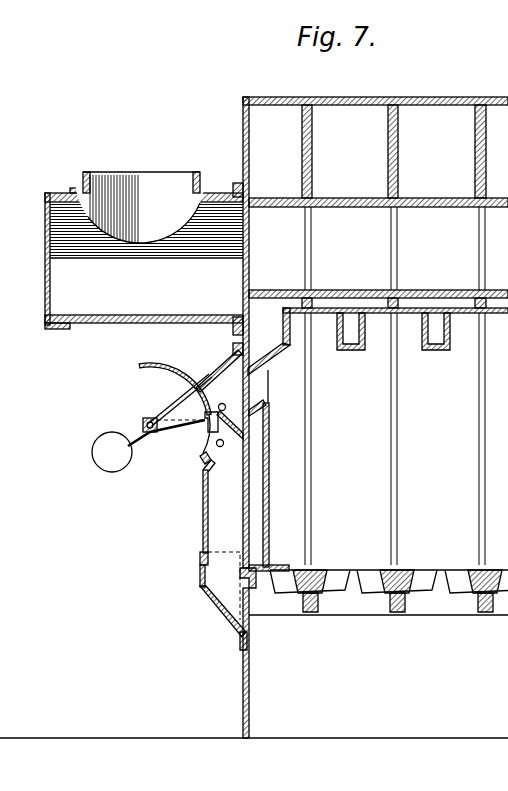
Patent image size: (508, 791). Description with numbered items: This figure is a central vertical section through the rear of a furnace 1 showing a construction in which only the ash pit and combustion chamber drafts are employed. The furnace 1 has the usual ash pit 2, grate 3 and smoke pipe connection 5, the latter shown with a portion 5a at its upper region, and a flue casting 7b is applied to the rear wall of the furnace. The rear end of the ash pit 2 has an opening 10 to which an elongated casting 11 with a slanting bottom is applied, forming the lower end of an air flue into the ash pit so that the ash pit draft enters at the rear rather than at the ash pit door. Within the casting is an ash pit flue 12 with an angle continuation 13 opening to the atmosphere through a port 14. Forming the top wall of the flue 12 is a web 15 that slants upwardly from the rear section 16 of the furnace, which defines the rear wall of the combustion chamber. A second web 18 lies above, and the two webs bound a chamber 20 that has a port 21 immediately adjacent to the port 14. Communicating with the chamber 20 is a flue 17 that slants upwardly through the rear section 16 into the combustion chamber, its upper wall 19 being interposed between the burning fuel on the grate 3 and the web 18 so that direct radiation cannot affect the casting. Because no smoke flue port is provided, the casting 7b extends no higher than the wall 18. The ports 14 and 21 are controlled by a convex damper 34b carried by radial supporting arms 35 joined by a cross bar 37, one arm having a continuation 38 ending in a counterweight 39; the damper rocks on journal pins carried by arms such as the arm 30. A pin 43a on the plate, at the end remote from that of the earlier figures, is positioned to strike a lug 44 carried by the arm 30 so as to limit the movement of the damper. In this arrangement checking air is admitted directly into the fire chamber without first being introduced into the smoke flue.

The furnace 1 is at (375, 97).
The ash pit 2 is at (254, 676).
The grate 3 is at (372, 570).
The smoke pipe connection 5 is at (144, 259).
The float chamber 5a is at (140, 178).
The flue casting 7b is at (200, 509).
The opening 10 is at (249, 615).
The elongated casting 11 is at (216, 610).
The ash pit flue 12 is at (244, 566).
The continuation 13 is at (204, 472).
The port 14 is at (192, 466).
The web 15 is at (250, 433).
The rear section 16 is at (270, 482).
The flue 17 is at (262, 392).
The web 18 is at (222, 372).
The upper wall of flue 19 is at (269, 351).
The chamber 20 is at (229, 400).
The port 21 is at (230, 406).
The arm 30 is at (170, 432).
The damper 34b is at (165, 363).
The radial supporting arms 35 is at (172, 402).
The cross bar 37 is at (148, 422).
The continuation 38 is at (143, 427).
The counterweight 39 is at (104, 462).
The pin 43a is at (207, 430).
The lug 44 is at (224, 422).